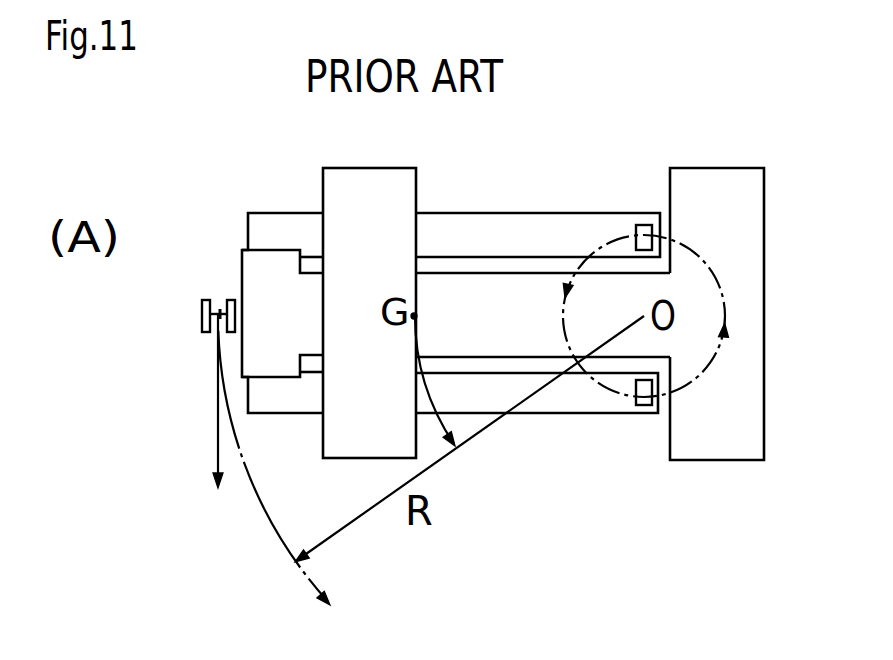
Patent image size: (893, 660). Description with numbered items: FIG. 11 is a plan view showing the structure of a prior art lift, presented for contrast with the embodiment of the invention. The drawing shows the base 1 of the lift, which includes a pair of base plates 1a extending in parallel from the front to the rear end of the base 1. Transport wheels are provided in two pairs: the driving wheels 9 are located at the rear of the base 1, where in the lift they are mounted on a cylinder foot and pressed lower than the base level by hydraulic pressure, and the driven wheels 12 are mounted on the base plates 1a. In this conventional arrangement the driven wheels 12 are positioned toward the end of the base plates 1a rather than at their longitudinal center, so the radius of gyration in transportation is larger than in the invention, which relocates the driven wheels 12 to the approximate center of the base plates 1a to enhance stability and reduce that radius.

The base 1 is at (705, 450).
The base plate 1a is at (460, 228).
The driving wheel 9 is at (199, 313).
The driven wheel 12 is at (647, 230).